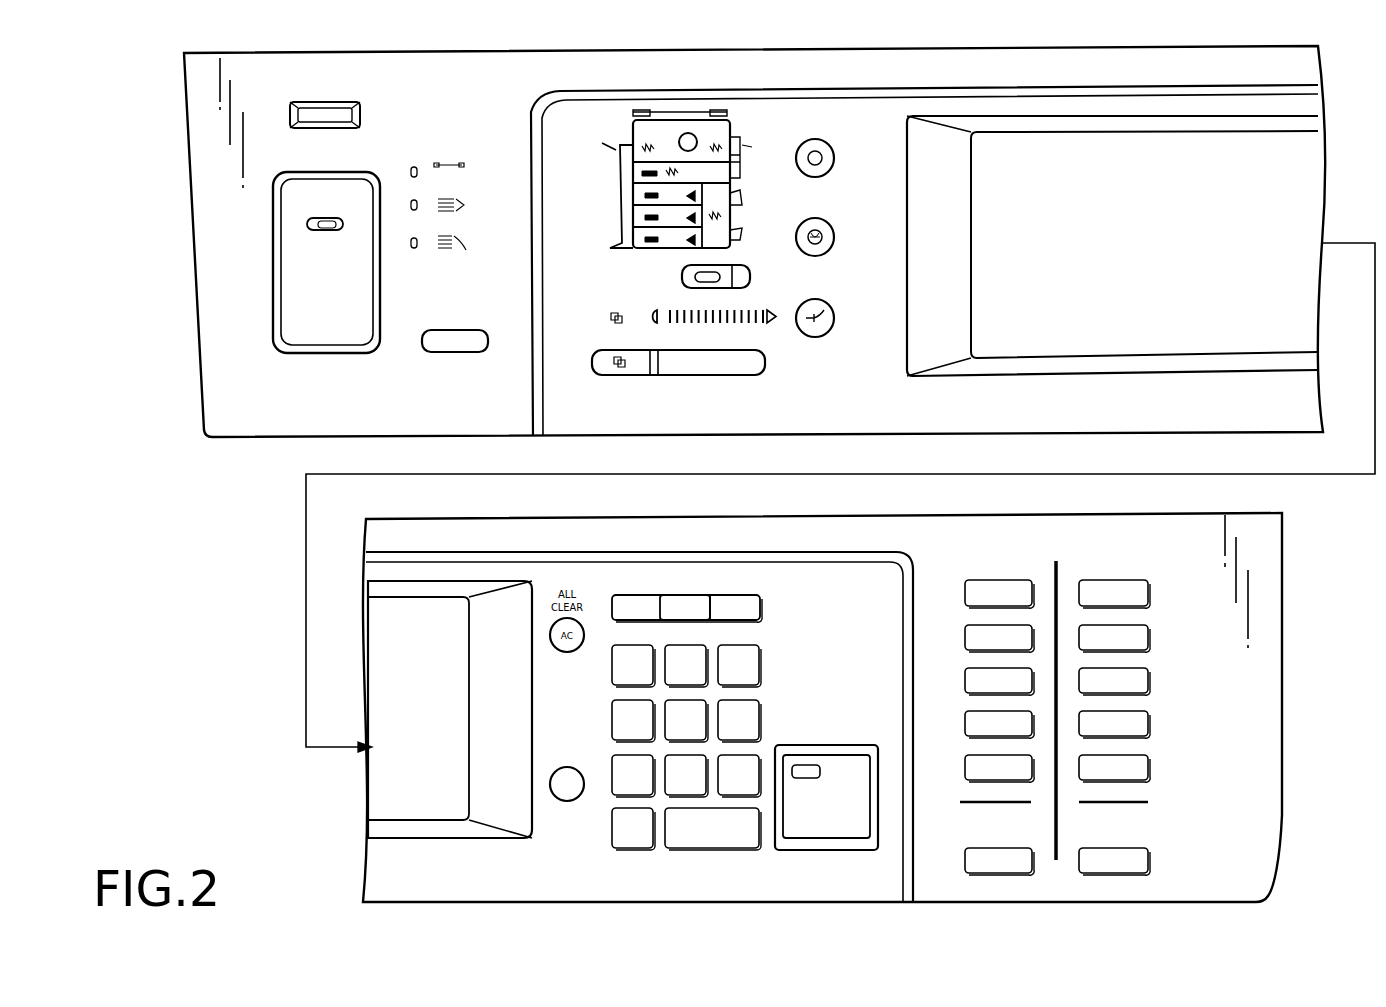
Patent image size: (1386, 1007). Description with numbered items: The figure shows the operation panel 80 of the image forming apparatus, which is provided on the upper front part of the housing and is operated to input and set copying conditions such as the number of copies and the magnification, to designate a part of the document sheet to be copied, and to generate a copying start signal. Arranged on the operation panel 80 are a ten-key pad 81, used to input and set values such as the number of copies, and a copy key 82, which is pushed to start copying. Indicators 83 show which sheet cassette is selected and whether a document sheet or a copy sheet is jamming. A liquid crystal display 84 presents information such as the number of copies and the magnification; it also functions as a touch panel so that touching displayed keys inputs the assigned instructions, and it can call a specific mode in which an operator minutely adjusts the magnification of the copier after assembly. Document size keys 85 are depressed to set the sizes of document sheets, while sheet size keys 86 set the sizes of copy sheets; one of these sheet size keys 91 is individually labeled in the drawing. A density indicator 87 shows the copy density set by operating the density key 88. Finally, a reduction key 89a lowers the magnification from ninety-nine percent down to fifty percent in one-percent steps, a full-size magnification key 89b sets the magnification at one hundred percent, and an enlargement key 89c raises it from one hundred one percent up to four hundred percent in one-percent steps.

The operation panel 80 is at (1077, 418).
The ten-key pad 81 is at (606, 813).
The copy key 82 is at (846, 764).
The indicators 83 is at (688, 133).
The liquid crystal display 84 is at (1101, 146).
The document size keys 85 is at (1123, 534).
The sheet size keys 86 is at (740, 167).
The density indicator 87 is at (778, 317).
The density key 88 is at (711, 375).
The reduction key 89a is at (632, 594).
The 100%-magnification key 89b is at (660, 594).
The enlargement key 89c is at (760, 600).
The A3 paper size key 91 is at (965, 590).